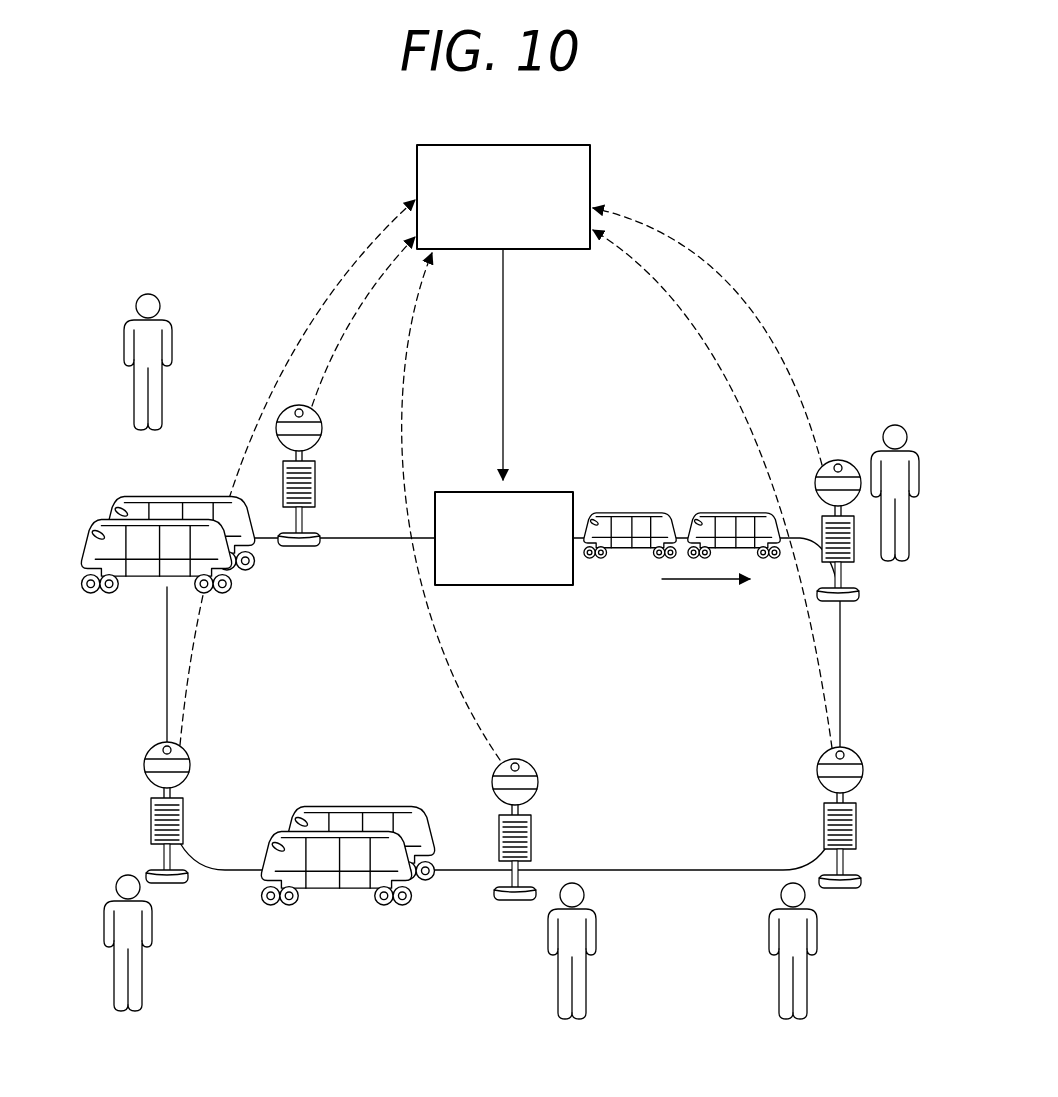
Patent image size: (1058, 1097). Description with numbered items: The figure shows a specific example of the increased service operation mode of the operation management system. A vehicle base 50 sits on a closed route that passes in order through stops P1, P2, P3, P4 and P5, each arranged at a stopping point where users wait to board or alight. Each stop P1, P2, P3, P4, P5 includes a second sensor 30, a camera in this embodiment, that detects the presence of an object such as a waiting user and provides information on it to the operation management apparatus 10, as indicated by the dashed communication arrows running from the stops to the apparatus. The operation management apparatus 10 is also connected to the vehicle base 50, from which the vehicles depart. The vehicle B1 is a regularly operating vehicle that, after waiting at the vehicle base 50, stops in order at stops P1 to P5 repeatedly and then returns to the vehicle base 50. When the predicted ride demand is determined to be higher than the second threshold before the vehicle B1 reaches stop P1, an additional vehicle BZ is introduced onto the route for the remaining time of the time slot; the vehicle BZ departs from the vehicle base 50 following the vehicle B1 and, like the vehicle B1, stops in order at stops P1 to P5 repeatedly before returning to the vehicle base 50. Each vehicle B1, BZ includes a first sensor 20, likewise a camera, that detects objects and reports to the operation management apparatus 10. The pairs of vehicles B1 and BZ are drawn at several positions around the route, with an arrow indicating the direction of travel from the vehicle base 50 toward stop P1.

The operation management apparatus 10 is at (417, 165).
The first sensor 20 is at (130, 508).
The second sensor 30 is at (305, 412).
The vehicle base 50 is at (470, 492).
The stop P1 is at (856, 553).
The stop P2 is at (823, 823).
The stop P3 is at (534, 833).
The stop P4 is at (150, 818).
The stop P5 is at (317, 490).
The vehicle B1 is at (165, 497).
The vehicle BZ is at (135, 597).